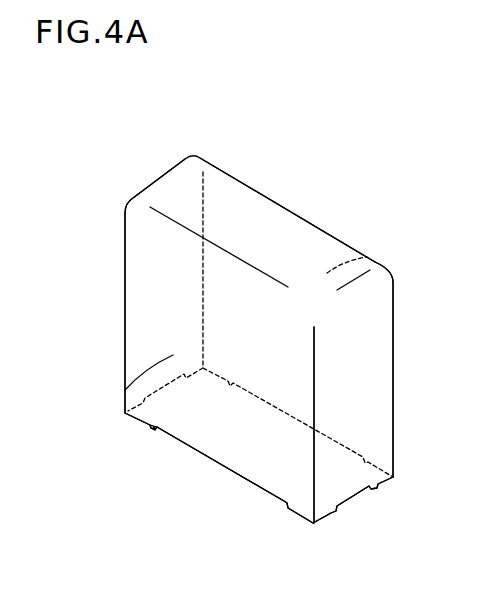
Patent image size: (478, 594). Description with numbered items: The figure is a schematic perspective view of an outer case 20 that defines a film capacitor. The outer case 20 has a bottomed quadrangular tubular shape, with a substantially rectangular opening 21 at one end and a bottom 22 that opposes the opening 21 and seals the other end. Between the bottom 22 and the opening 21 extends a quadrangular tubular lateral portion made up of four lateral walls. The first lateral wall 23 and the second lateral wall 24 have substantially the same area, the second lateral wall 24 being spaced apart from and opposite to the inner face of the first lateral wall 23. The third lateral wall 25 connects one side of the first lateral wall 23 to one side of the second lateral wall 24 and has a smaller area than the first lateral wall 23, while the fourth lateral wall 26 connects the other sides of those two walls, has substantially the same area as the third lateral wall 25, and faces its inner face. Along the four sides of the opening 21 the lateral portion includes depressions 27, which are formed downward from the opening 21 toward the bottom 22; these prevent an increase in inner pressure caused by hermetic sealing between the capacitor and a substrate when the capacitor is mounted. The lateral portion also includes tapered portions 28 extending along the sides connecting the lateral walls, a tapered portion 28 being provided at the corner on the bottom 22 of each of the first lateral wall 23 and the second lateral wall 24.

The outer case 20 is at (137, 162).
The opening 21 is at (232, 438).
The bottom 22 is at (223, 190).
The first lateral wall 23 is at (124, 391).
The second lateral wall 24 is at (367, 257).
The third lateral wall 25 is at (358, 400).
The fourth lateral wall 26 is at (157, 320).
The depressions 27 is at (154, 428).
The tapered portions 28 is at (133, 207).